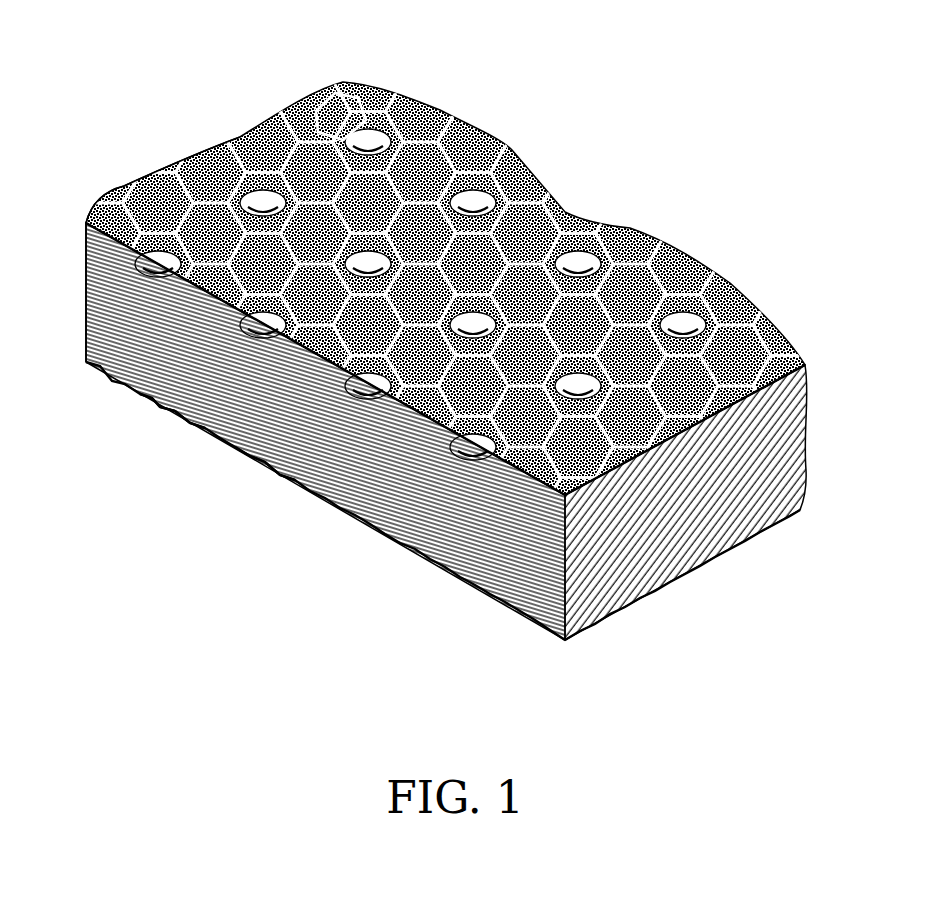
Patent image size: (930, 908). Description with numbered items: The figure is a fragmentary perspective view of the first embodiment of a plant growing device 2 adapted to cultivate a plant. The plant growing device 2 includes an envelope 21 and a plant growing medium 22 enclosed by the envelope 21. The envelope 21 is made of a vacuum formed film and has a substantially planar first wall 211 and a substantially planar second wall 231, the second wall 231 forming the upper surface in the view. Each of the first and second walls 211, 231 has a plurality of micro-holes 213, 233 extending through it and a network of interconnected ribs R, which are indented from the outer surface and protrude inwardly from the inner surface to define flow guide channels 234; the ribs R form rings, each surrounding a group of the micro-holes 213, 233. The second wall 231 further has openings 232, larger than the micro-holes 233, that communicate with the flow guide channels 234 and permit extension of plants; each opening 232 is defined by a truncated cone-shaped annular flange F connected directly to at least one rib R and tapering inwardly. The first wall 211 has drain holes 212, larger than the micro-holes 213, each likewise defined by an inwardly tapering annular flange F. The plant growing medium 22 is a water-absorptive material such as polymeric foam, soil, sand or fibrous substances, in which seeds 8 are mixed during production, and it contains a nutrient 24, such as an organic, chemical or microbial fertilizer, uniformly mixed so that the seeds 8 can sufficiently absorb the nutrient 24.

The plant growing device 2 is at (420, 363).
The seeds 8 is at (87, 313).
The envelope 21 is at (502, 611).
The plant growing medium 22 is at (477, 527).
The nutrient 24 is at (415, 515).
The first wall 211 is at (183, 423).
The drain holes 212 is at (157, 400).
The micro-holes 213 is at (250, 460).
The second wall 231 is at (720, 267).
The openings 232 is at (205, 142).
The micro-holes 233 is at (473, 137).
The flow guide channels 234 is at (312, 120).
The ribs R is at (342, 120).
The annular flanges F is at (273, 193).